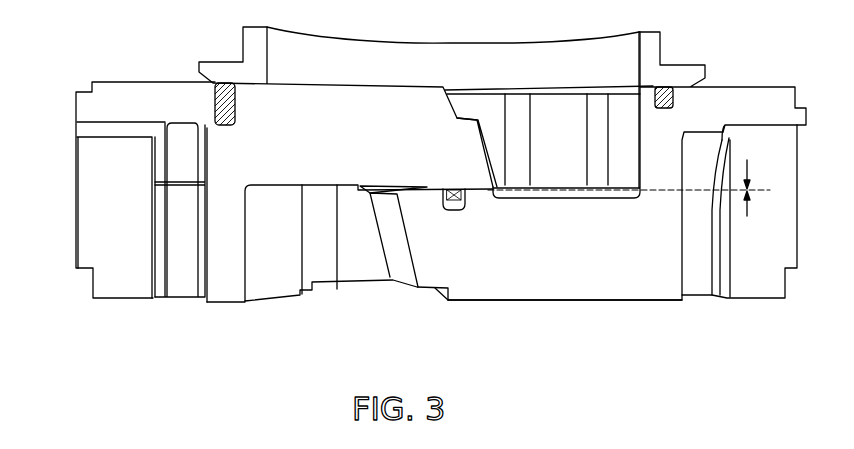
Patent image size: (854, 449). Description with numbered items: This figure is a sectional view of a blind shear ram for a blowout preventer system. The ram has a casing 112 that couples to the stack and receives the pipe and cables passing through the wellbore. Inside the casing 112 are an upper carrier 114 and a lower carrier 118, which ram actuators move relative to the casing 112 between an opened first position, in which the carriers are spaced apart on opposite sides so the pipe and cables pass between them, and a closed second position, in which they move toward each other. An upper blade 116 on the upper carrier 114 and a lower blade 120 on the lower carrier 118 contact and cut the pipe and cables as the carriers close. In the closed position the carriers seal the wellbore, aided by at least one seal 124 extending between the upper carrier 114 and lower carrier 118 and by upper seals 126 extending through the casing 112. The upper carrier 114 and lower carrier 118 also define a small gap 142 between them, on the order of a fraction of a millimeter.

The casing 112 is at (120, 128).
The upper carrier 114 is at (247, 165).
The upper blade 116 is at (470, 168).
The lower carrier 118 is at (568, 278).
The lower blade 120 is at (398, 272).
The seal 124 is at (447, 200).
The upper seals 126 is at (228, 83).
The gap 142 is at (747, 213).